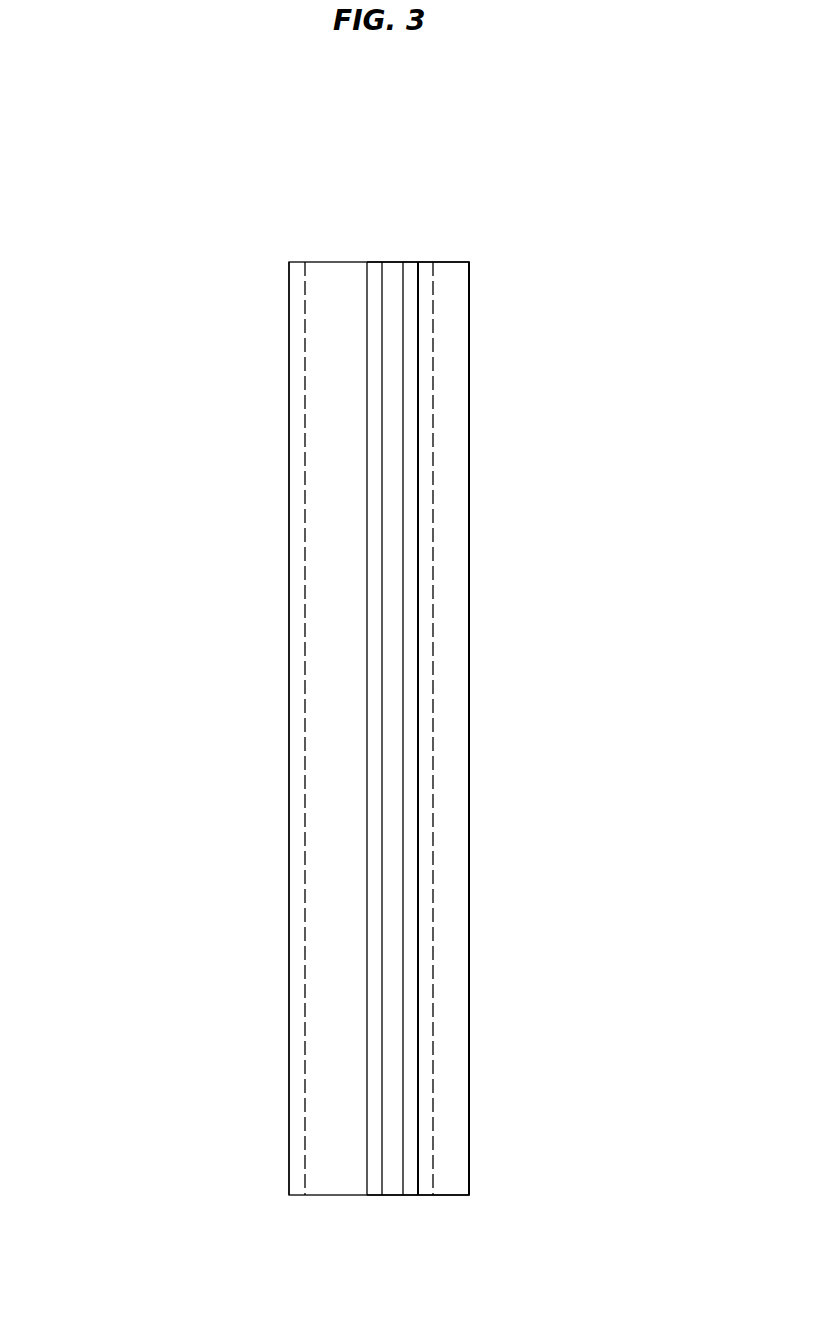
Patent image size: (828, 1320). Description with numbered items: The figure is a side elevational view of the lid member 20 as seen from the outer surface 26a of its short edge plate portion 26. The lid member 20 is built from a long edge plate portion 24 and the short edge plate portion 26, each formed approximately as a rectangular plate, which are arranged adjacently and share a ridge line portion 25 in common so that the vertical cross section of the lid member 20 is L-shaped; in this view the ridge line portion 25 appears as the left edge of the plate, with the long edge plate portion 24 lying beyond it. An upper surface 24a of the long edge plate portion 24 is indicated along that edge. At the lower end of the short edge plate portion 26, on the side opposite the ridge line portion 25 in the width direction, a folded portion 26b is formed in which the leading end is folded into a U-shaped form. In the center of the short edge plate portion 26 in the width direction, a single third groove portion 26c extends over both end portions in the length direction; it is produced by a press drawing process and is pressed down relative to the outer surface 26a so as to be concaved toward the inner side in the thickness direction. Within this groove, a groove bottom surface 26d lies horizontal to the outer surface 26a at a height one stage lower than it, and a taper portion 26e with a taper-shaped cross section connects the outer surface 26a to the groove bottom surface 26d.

The lid member 20 is at (333, 186).
The long edge plate portion 24 is at (286, 311).
The upper surface 24a is at (289, 468).
The ridge line portion 25 is at (289, 1108).
The short edge plate portion 26 is at (486, 403).
The outer surface 26a is at (333, 686).
The folded portion 26b is at (557, 570).
The third groove portion 26c is at (393, 800).
The groove bottom surface 26d is at (393, 884).
The taper portion 26e is at (373, 959).